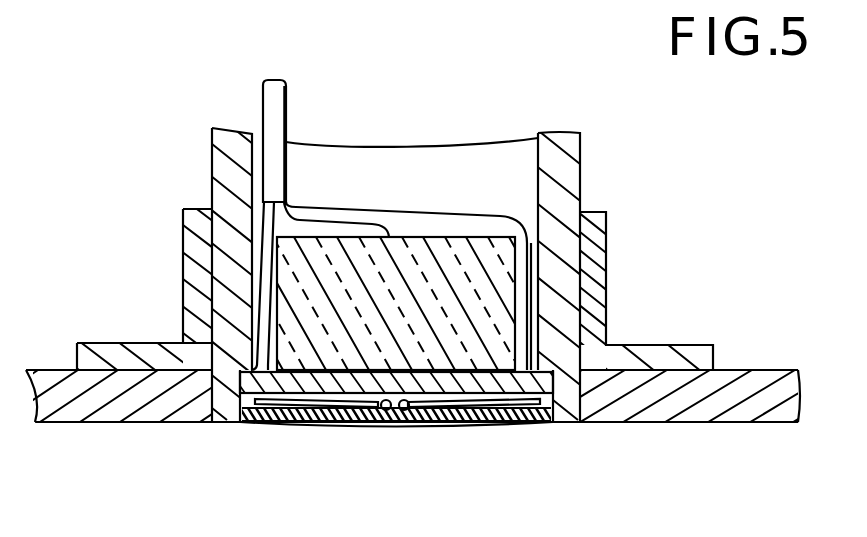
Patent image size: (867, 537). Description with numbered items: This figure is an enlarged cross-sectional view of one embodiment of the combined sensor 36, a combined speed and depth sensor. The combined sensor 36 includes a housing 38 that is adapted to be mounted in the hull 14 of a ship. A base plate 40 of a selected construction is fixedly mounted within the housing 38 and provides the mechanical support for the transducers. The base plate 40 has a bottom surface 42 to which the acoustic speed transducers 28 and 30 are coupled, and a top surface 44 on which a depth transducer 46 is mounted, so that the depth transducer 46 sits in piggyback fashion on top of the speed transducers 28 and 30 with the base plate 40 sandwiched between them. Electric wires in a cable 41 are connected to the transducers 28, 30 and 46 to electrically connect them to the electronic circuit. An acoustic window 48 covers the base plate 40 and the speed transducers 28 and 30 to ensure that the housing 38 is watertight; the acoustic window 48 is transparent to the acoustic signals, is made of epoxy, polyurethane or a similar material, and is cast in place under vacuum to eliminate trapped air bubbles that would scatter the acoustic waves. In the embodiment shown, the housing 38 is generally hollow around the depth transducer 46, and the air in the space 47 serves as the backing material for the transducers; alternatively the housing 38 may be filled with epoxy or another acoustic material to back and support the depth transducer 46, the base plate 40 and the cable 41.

The hull 14 is at (763, 406).
The acoustic speed transducer 28 is at (300, 425).
The acoustic speed transducer 30 is at (463, 427).
The combined sensor 36 is at (112, 118).
The housing 38 is at (568, 158).
The base plate 40 is at (550, 425).
The cable 41 is at (288, 88).
The bottom surface 42 is at (250, 425).
The top surface 44 is at (183, 317).
The depth transducer 46 is at (278, 277).
The space 47 is at (445, 160).
The acoustic window 48 is at (382, 428).